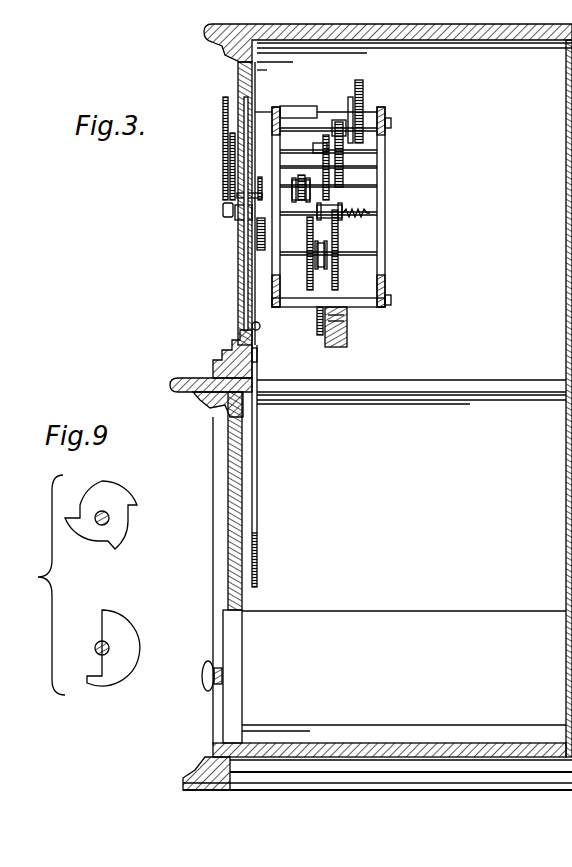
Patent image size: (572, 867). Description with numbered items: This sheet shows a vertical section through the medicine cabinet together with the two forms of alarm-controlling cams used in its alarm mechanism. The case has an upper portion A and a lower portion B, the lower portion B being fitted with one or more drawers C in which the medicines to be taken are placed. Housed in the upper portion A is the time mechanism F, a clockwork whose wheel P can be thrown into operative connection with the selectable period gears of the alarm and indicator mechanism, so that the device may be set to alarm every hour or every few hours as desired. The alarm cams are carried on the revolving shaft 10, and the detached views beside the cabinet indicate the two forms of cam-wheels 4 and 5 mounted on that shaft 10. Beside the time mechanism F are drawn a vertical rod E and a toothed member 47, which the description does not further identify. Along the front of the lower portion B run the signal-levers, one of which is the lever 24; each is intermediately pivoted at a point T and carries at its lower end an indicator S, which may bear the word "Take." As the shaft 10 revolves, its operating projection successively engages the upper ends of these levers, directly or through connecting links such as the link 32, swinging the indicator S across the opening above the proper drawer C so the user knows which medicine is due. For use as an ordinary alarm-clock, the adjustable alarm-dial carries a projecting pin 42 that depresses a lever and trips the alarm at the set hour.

In FIG. 3, the projecting pin 42 is at (235, 197).
In FIG. 3, the toothed bar 47 is at (256, 246).
In FIG. 3, the vertical rod E is at (244, 268).
In FIG. 3, the link 32 is at (261, 328).
In FIG. 3, the pivot points T is at (258, 360).
In FIG. 3, the lever 24 is at (258, 467).
In FIG. 3, the indicator S is at (258, 556).
In FIG. 3, the wheel of the time mechanism P is at (340, 247).
In FIG. 3, the time mechanism F is at (333, 206).
In FIG. 3, the upper portion A is at (475, 181).
In FIG. 3, the lower portion B is at (410, 507).
In FIG. 3, the drawer C is at (384, 671).
In FIG. 9, the cam-wheel 4 is at (121, 503).
In FIG. 9, the cam-wheel 5 is at (135, 635).
In FIG. 9, the shaft 10 is at (98, 527).